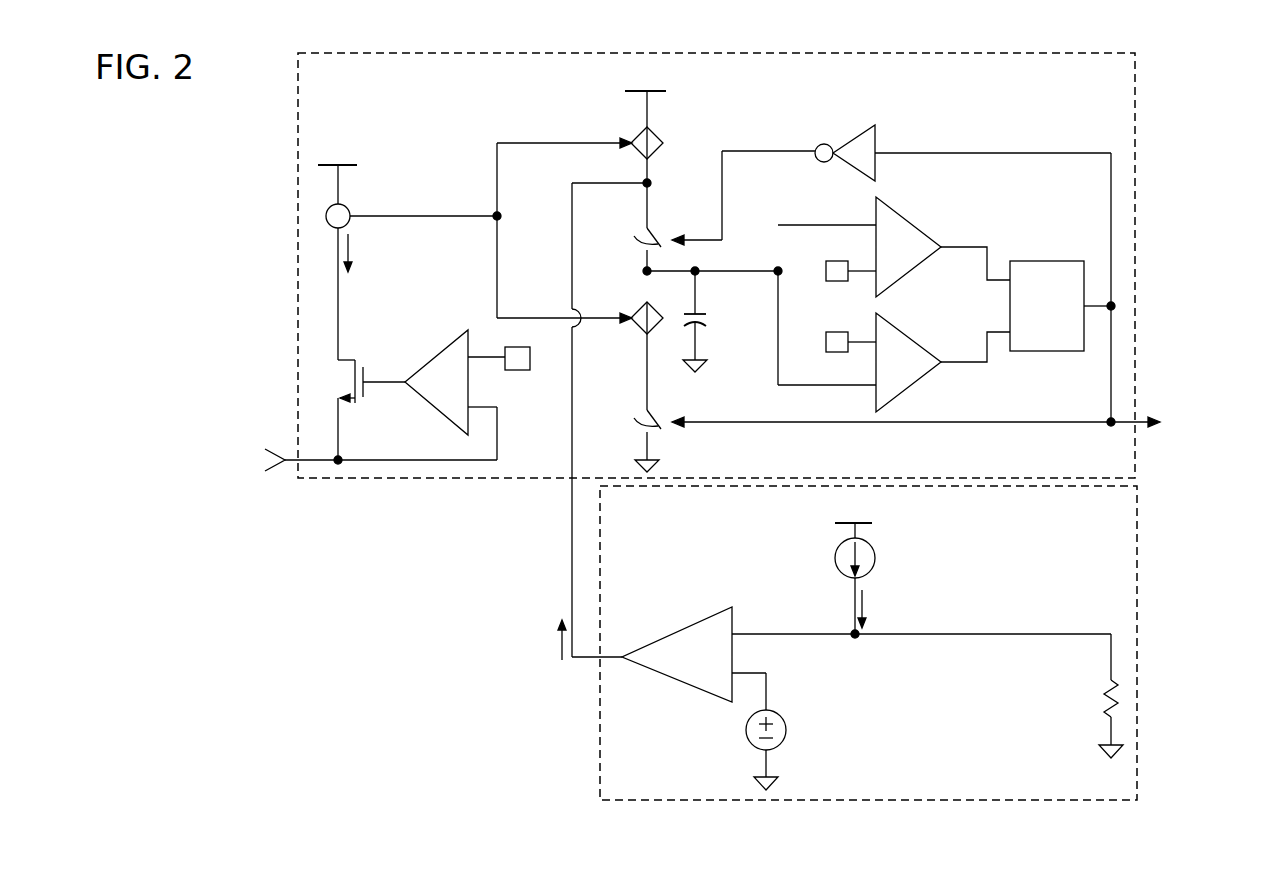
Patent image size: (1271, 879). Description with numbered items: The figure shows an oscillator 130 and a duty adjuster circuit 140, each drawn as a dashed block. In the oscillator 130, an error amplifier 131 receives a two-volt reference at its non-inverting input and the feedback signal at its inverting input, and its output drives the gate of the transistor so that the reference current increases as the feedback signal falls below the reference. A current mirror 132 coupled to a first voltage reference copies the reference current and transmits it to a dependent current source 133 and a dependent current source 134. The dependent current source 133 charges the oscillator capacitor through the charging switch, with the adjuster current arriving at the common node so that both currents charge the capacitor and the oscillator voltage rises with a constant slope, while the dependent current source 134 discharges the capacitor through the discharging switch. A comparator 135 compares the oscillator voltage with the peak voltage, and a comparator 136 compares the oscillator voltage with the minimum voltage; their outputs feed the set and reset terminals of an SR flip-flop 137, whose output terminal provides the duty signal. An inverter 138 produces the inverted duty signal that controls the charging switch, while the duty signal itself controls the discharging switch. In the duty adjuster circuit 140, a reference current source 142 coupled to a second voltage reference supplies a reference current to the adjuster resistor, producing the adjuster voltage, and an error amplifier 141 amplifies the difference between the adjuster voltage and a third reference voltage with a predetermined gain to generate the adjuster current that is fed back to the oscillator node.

The oscillator 130 is at (1135, 137).
The error amplifier 131 is at (425, 345).
The current mirror 132 is at (350, 209).
The dependent current source 133 is at (660, 139).
The dependent current source 134 is at (636, 330).
The comparator 135 is at (916, 218).
The comparator 136 is at (922, 378).
The SR flip-flop 137 is at (1057, 261).
The inverter 138 is at (868, 125).
The duty adjuster circuit 140 is at (1137, 572).
The error amplifier 141 is at (683, 630).
The reference current source 142 is at (876, 558).